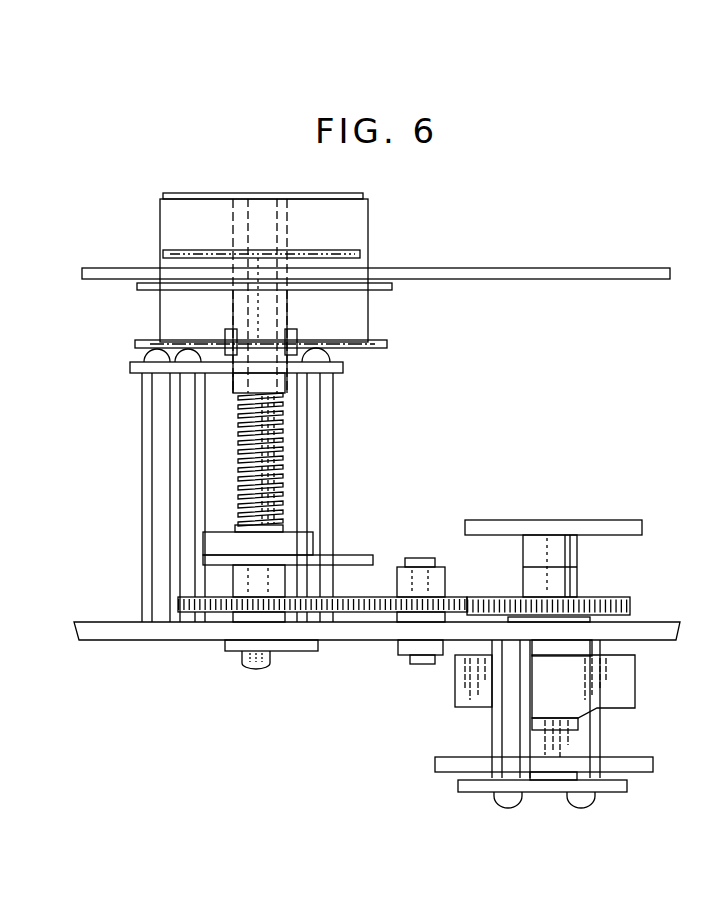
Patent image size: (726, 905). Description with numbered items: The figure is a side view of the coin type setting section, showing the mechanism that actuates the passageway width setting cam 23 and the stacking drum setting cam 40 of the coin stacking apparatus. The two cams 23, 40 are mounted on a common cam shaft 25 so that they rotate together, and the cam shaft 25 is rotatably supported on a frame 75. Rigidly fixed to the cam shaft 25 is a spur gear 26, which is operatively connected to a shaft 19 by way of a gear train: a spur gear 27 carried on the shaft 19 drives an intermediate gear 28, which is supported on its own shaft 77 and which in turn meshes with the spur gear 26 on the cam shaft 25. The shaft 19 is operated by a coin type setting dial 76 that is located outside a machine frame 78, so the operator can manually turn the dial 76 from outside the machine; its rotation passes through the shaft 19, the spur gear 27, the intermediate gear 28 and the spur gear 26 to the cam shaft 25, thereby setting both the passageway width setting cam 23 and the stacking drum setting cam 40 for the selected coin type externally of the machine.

The shaft 19 is at (283, 457).
The passageway width setting cam 23 is at (618, 521).
The cam shaft 25 is at (577, 588).
The spur gear 26 is at (618, 598).
The spur gear 27 is at (213, 612).
The intermediate gear 28 is at (380, 597).
The stacking drum setting cam 40 is at (638, 768).
The frame 75 is at (660, 640).
The coin type setting dial 76 is at (367, 228).
The shaft 77 is at (398, 630).
The machine frame 78 is at (493, 269).